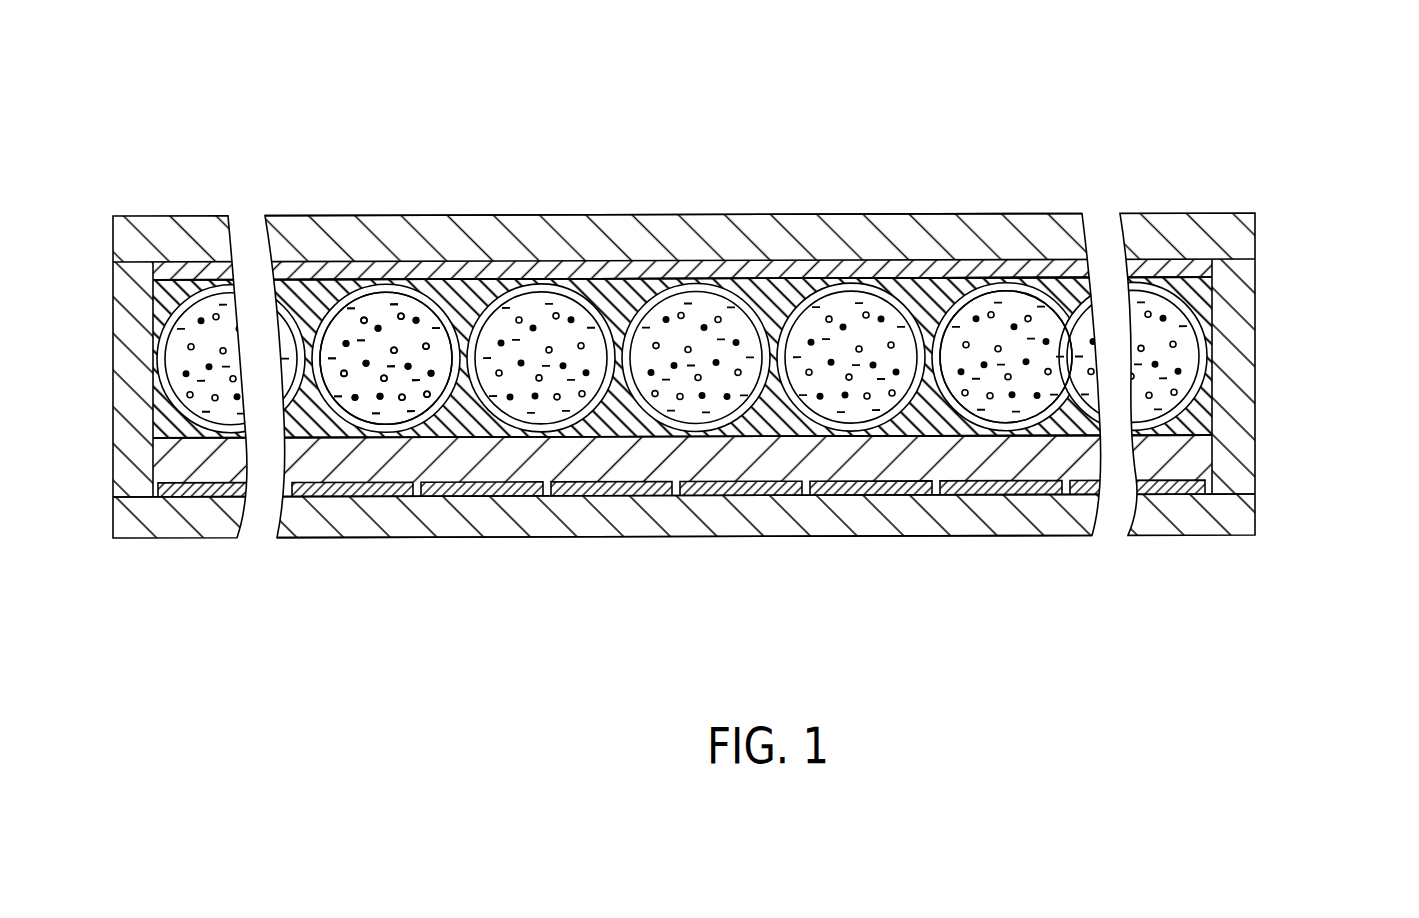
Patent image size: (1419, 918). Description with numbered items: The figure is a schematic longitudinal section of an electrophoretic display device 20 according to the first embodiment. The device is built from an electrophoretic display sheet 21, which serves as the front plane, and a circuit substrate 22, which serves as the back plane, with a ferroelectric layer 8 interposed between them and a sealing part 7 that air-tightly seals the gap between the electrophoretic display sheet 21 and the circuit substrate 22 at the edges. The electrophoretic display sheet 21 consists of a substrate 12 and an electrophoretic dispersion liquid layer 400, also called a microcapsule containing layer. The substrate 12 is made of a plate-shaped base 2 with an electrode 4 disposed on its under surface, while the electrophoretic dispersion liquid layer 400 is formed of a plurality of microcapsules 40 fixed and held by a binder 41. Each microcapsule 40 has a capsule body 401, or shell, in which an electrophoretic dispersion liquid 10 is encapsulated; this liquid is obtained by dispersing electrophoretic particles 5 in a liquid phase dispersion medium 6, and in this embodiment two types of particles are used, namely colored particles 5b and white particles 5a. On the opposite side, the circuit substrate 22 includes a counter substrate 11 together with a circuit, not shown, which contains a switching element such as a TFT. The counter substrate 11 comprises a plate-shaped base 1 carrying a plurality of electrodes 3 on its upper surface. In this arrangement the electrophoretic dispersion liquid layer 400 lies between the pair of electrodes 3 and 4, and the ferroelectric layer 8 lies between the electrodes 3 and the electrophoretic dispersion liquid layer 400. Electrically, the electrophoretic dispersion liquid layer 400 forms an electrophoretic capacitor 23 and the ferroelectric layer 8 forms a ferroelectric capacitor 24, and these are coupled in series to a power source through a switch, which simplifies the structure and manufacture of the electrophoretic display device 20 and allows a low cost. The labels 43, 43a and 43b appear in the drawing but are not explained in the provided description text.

The base 1 is at (758, 517).
The base 2 is at (807, 234).
The electrodes 3 is at (700, 488).
The electrode 4 is at (762, 269).
The electrophoretic particles 5 is at (384, 358).
The white particles 5a is at (990, 398).
The colored particles 5b is at (380, 397).
The liquid phase dispersion medium 6 is at (401, 403).
The sealing part 7 is at (135, 470).
The ferroelectric layer 8 is at (1185, 463).
The electrophoretic dispersion liquid 10 is at (462, 586).
The counter substrate 11 is at (752, 592).
The substrate 12 is at (833, 142).
The electrophoretic display device 20 is at (1149, 99).
The electrophoretic display sheet 21 is at (1285, 230).
The circuit substrate 22 is at (1288, 521).
The electrophoretic capacitor 23 is at (682, 278).
The ferroelectric capacitor 24 is at (682, 436).
The microcapsules 40 is at (575, 450).
The binder 41 is at (462, 362).
The electrophoretic display layer 43 is at (682, 357).
The lower surface of display layer 43a is at (297, 437).
The upper surface of display layer 43b is at (308, 292).
The electrophoretic dispersion liquid layer 400 is at (1258, 280).
The capsule body 401 is at (537, 288).